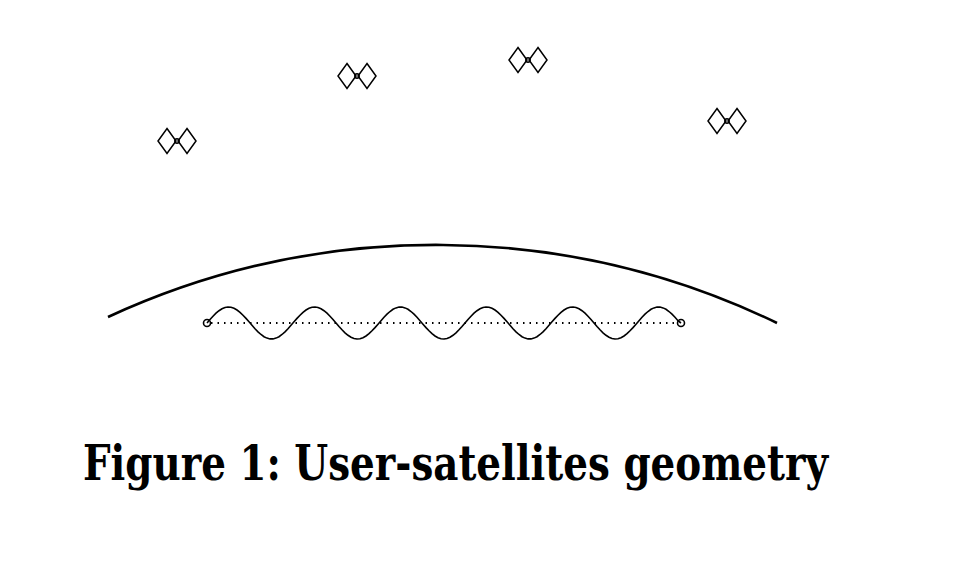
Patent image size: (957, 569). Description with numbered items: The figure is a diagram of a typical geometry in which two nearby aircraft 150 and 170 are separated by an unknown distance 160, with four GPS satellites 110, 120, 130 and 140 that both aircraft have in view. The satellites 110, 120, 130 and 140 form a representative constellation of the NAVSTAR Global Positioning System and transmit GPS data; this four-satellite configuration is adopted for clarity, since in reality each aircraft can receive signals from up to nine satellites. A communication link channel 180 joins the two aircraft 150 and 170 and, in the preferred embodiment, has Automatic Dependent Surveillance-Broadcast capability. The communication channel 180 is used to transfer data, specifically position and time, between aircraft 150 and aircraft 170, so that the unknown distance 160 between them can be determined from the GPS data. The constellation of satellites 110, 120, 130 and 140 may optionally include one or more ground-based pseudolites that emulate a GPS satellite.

The GPS satellite 110 is at (160, 130).
The GPS satellite 120 is at (338, 65).
The GPS satellite 130 is at (545, 45).
The GPS satellite 140 is at (743, 112).
The aircraft 150 is at (200, 330).
The unknown distance 160 is at (357, 320).
The aircraft 170 is at (687, 335).
The communication link channel 180 is at (463, 332).